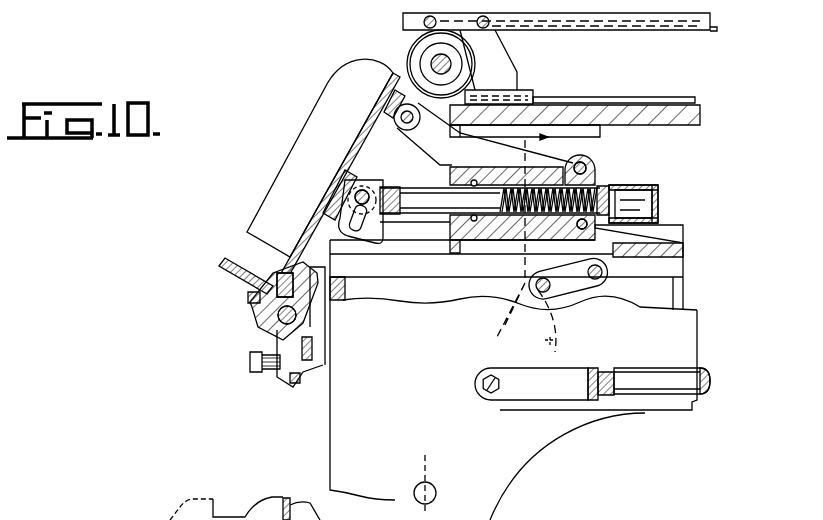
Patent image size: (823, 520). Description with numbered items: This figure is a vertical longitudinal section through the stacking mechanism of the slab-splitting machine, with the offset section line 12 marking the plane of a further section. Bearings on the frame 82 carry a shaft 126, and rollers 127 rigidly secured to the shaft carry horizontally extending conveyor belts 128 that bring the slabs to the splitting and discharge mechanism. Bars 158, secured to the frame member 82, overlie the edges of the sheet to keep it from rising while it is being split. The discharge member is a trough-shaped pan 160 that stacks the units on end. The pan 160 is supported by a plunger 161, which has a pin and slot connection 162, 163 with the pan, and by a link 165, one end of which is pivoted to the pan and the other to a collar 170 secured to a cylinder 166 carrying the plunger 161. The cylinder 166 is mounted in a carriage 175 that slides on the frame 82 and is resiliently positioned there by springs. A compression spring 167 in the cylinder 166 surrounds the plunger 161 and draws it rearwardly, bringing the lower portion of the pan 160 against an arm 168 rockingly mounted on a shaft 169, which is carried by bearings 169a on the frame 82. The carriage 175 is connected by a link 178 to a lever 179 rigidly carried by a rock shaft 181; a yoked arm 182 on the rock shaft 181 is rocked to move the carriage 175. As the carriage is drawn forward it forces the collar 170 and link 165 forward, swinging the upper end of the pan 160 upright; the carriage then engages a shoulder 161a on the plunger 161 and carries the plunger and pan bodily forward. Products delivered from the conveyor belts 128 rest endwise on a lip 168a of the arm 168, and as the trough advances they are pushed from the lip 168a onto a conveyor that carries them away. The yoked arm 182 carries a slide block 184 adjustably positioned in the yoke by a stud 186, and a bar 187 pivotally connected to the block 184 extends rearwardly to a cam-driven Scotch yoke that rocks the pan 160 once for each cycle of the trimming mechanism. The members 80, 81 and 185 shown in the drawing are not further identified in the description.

The feed direction arrow 12 is at (525, 135).
The frame member 80 is at (513, 276).
The frame 81 is at (513, 380).
The frame 82 is at (686, 126).
The shaft 126 is at (452, 62).
The rollers 127 is at (416, 48).
The conveyor belts 128 is at (617, 97).
The bars 158 is at (561, 30).
The trough-shaped pan 160 is at (321, 128).
The plunger 161 is at (433, 192).
The shoulder 161a is at (401, 223).
The pin of pin and slot connection 162 is at (347, 234).
The slot of pin and slot connection 163 is at (367, 192).
The link 165 is at (406, 126).
The cylinder 166 is at (651, 186).
The compression spring 167 is at (604, 185).
The arm 168 is at (257, 314).
The lip 168a is at (224, 262).
The shaft 169 is at (265, 330).
The bearings 169a is at (313, 370).
The collar 170 is at (589, 160).
The carriage 175 is at (481, 247).
The link 178 is at (583, 290).
The lever 179 is at (558, 340).
The rock shaft 181 is at (409, 490).
The yoked arm 182 is at (438, 451).
The slide block 184 is at (467, 370).
The handle arm 185 is at (536, 384).
The stud 186 is at (493, 327).
The bar 187 is at (652, 370).